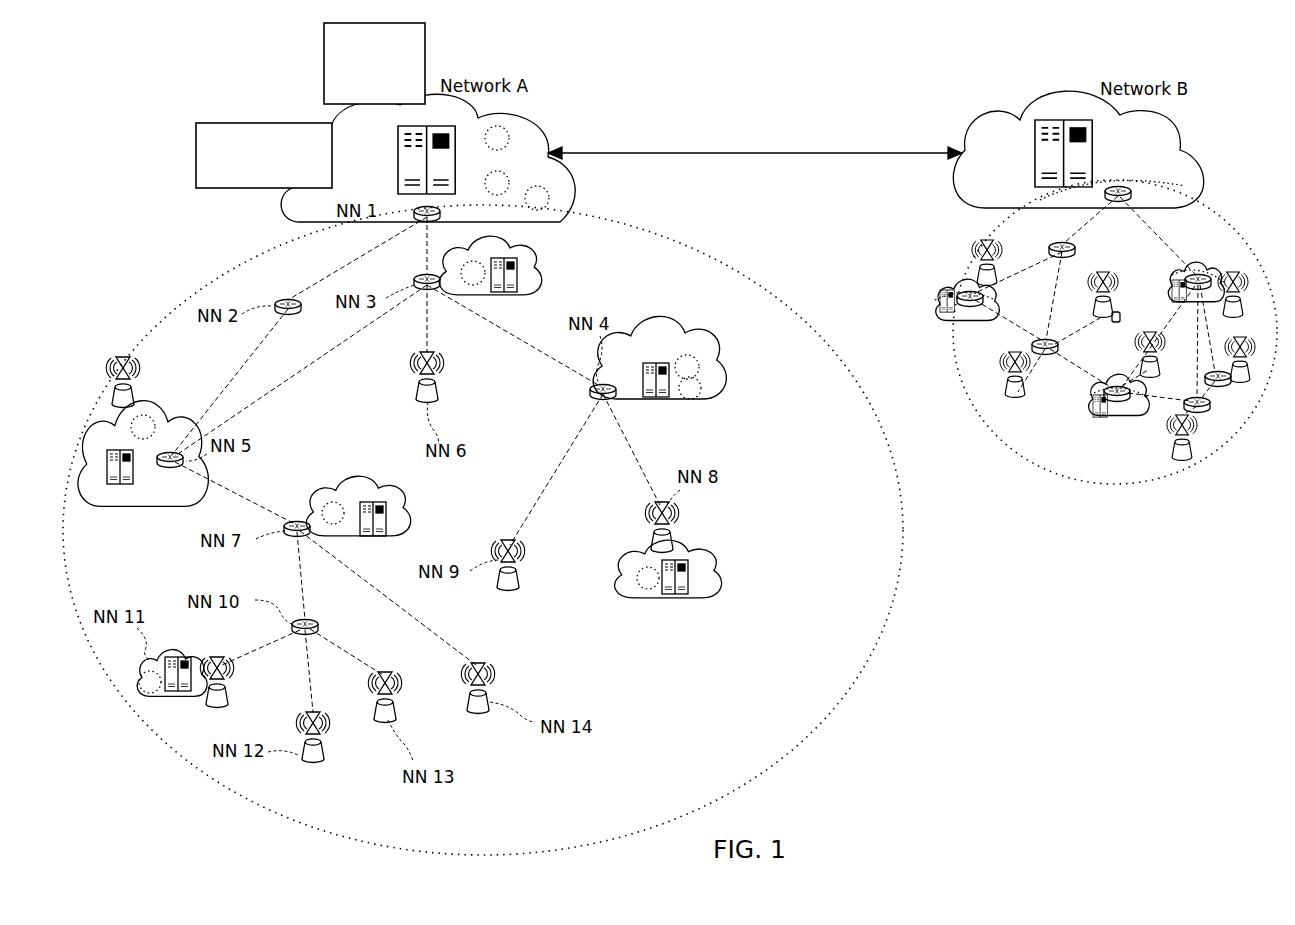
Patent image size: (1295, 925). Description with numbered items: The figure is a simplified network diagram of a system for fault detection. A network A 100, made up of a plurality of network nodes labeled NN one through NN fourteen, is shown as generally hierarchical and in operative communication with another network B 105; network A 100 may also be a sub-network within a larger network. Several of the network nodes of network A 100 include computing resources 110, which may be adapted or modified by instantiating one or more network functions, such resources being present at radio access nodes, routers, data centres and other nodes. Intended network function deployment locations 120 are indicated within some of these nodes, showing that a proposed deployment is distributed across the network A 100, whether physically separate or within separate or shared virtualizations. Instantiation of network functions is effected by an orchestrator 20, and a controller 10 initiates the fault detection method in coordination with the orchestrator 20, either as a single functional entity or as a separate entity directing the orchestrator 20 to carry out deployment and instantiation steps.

The controller 10 is at (374, 63).
The orchestrator 20 is at (264, 155).
The network A 100 is at (183, 210).
The network B 105 is at (900, 262).
The computing resources 110 is at (395, 162).
The network function deployment locations 120 is at (537, 186).